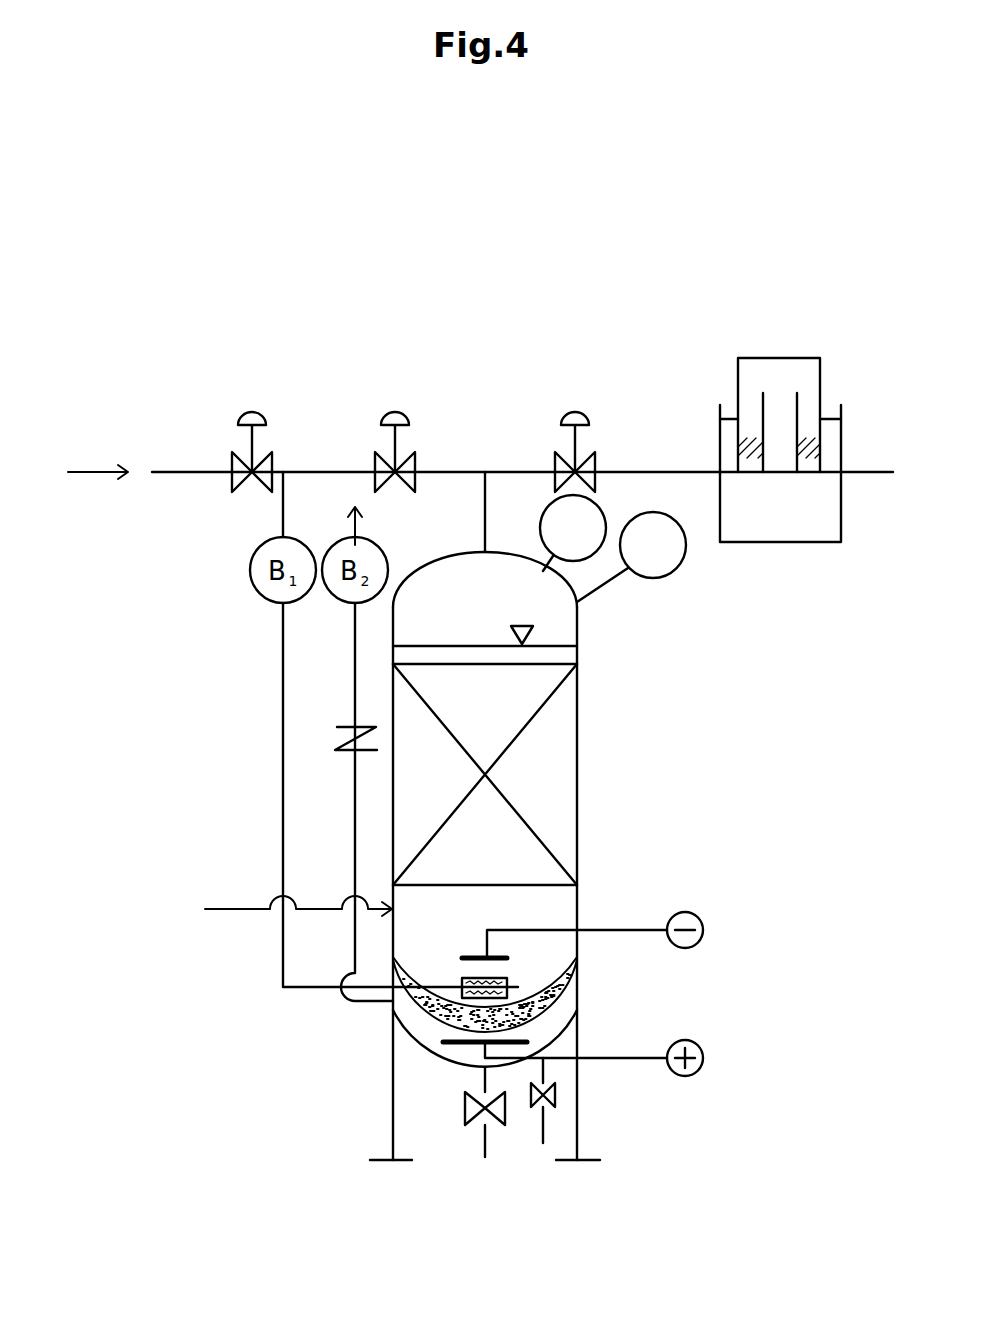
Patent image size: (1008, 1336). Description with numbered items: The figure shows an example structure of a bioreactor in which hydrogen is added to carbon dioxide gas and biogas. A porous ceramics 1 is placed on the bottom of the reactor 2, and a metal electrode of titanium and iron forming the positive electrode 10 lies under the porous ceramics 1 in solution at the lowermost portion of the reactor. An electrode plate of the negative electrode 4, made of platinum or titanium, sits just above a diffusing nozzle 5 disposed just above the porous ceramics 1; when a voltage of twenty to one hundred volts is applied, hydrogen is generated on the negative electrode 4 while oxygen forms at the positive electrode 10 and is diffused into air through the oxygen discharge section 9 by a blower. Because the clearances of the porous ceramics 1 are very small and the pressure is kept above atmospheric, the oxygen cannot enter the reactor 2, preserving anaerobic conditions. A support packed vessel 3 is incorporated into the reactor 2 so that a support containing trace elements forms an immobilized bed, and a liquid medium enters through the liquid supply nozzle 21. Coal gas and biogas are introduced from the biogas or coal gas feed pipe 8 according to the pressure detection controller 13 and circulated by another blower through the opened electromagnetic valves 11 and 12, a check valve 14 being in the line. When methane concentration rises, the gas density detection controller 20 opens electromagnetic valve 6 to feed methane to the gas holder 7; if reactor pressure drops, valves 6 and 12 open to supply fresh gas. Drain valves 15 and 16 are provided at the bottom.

The porous ceramics 1 is at (577, 970).
The reactor 2 is at (578, 673).
The support packed vessel 3 is at (545, 738).
The negative electrode 4 is at (598, 935).
The diffusing nozzle 5 is at (462, 1000).
The electromagnetic valve 6 is at (575, 432).
The gas holder 7 is at (796, 450).
The biogas or coal gas feed pipe 8 is at (84, 473).
The oxygen discharge section 9 is at (340, 527).
The positive electrode 10 is at (596, 1058).
The electromagnetic valve 11 is at (252, 432).
The electromagnetic valve 12 is at (395, 432).
The pressure detection controller 13 is at (649, 557).
The check valve 14 is at (341, 759).
The drain valve 15 is at (529, 1102).
The drain valve 16 is at (469, 1115).
The gas density detection controller 20 is at (554, 530).
The liquid supply nozzle for a medium 21 is at (276, 908).